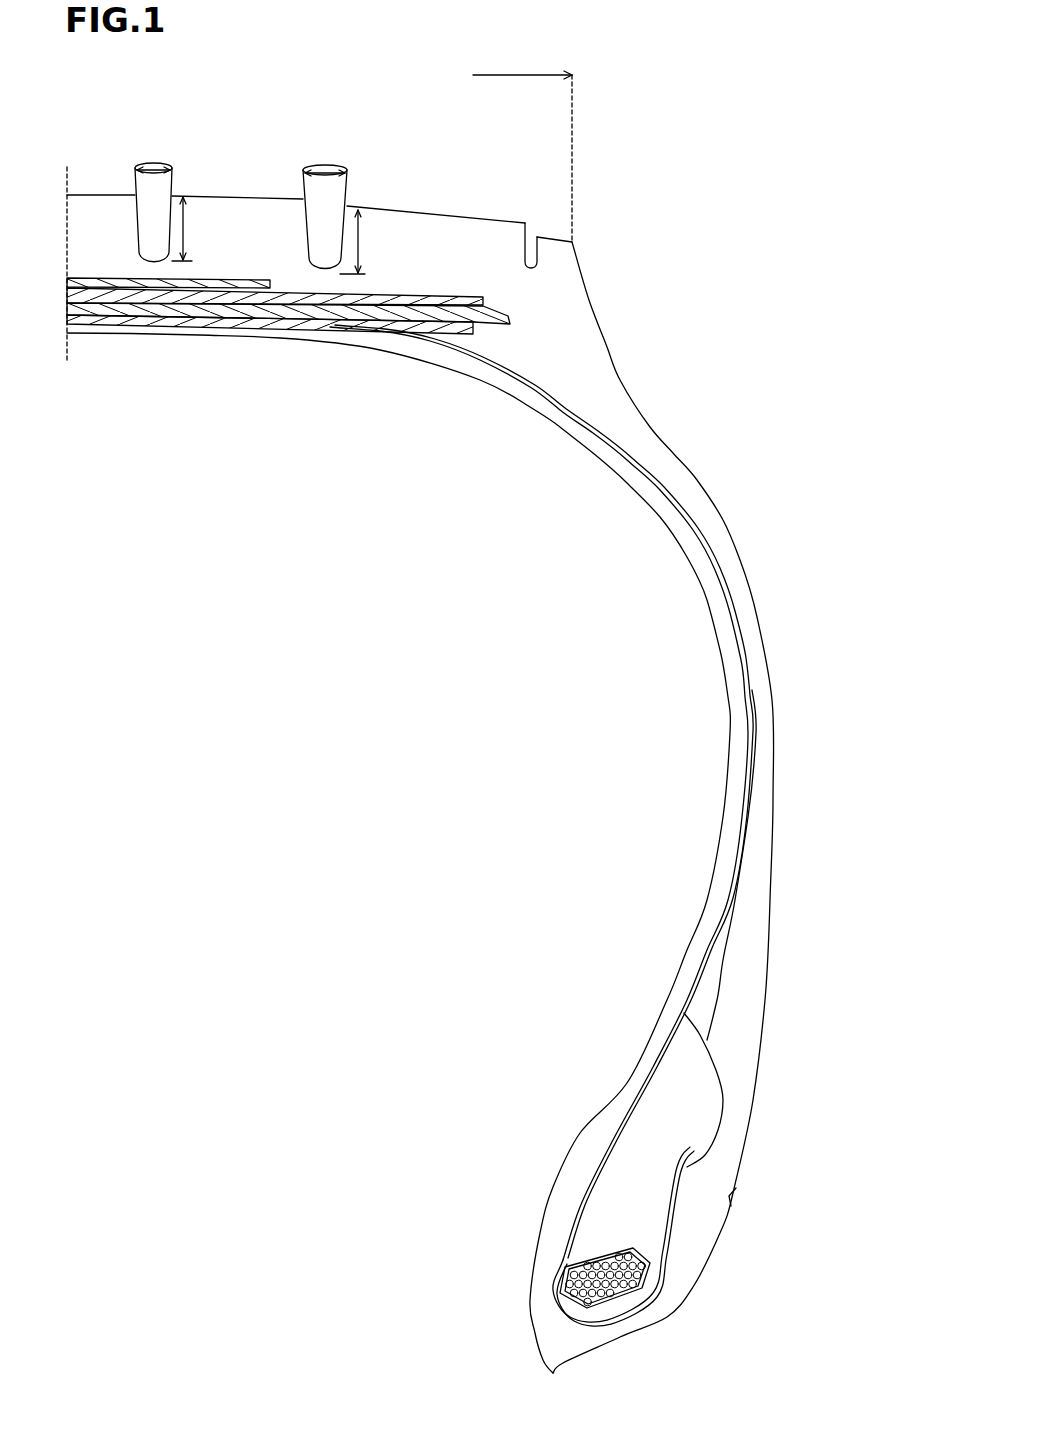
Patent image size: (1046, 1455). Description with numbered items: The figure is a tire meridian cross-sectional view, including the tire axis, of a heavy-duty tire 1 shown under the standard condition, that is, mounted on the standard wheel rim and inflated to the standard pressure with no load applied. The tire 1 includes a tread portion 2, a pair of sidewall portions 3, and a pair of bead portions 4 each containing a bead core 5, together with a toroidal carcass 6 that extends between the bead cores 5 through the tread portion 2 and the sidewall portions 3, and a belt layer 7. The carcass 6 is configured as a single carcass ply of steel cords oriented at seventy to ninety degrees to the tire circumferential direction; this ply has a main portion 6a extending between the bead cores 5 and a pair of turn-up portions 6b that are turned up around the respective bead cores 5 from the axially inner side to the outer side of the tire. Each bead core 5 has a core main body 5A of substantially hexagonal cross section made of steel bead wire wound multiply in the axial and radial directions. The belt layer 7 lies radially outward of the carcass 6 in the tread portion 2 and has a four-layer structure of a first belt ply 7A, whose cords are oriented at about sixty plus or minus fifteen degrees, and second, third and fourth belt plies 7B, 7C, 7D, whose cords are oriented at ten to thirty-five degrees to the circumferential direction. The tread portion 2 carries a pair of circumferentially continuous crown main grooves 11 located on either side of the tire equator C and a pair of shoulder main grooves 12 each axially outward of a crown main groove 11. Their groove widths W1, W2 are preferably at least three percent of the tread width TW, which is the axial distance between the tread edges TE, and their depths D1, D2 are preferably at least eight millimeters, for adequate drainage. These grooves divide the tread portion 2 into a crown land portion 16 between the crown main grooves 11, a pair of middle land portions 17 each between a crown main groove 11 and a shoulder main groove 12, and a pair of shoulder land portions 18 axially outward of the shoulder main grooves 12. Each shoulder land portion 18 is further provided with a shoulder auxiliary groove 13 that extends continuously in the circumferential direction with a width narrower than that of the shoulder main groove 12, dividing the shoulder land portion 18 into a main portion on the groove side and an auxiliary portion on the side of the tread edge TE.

The heavy-duty tire 1 is at (692, 232).
The tread portion 2 is at (257, 193).
The sidewall portion 3 is at (765, 567).
The bead portion 4 is at (730, 1245).
The bead core 5 is at (598, 1257).
The core main body 5A is at (567, 1313).
The carcass 6 is at (584, 928).
The main portion 6a is at (737, 857).
The turn-up portion 6b is at (667, 998).
The belt layer 7 is at (286, 382).
The first belt ply 7A is at (88, 305).
The second belt ply 7B is at (132, 297).
The third belt ply 7C is at (177, 282).
The fourth belt ply 7D is at (207, 293).
The crown main groove 11 is at (153, 233).
The shoulder main groove 12 is at (320, 243).
The shoulder auxiliary groove 13 is at (532, 243).
The crown land portion 16 is at (90, 227).
The middle land portion 17 is at (238, 228).
The shoulder land portion 18 is at (430, 235).
The tire equator C is at (66, 252).
The tread edge TE is at (572, 243).
The tread width TW is at (520, 62).
The groove width of crown main groove W1 is at (160, 154).
The groove width of shoulder main groove W2 is at (328, 158).
The depth of crown main groove D1 is at (199, 229).
The depth of shoulder main groove D2 is at (370, 242).